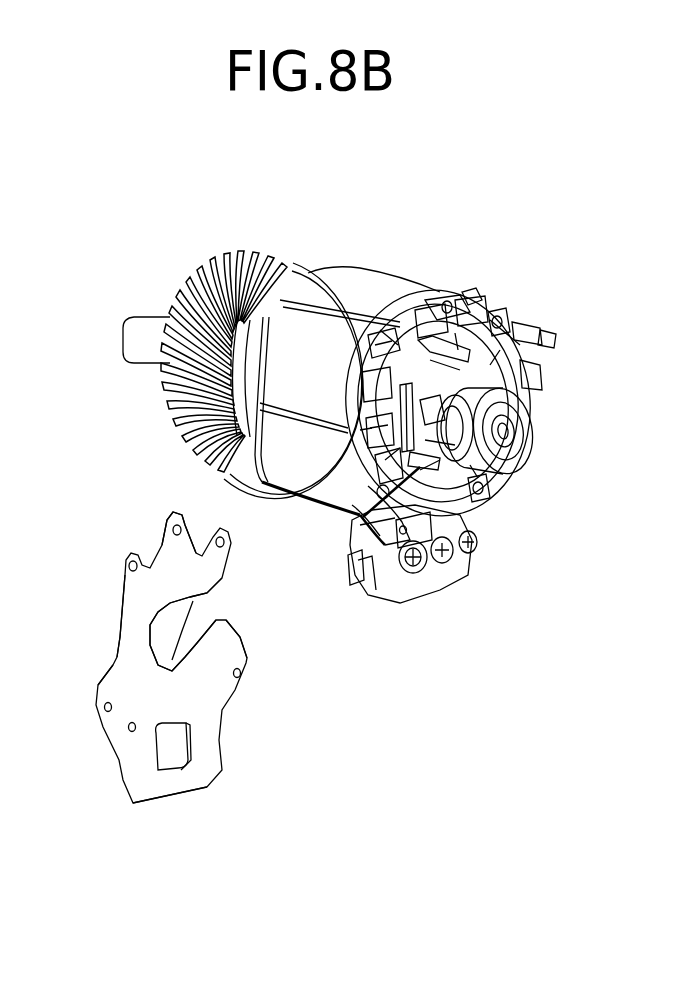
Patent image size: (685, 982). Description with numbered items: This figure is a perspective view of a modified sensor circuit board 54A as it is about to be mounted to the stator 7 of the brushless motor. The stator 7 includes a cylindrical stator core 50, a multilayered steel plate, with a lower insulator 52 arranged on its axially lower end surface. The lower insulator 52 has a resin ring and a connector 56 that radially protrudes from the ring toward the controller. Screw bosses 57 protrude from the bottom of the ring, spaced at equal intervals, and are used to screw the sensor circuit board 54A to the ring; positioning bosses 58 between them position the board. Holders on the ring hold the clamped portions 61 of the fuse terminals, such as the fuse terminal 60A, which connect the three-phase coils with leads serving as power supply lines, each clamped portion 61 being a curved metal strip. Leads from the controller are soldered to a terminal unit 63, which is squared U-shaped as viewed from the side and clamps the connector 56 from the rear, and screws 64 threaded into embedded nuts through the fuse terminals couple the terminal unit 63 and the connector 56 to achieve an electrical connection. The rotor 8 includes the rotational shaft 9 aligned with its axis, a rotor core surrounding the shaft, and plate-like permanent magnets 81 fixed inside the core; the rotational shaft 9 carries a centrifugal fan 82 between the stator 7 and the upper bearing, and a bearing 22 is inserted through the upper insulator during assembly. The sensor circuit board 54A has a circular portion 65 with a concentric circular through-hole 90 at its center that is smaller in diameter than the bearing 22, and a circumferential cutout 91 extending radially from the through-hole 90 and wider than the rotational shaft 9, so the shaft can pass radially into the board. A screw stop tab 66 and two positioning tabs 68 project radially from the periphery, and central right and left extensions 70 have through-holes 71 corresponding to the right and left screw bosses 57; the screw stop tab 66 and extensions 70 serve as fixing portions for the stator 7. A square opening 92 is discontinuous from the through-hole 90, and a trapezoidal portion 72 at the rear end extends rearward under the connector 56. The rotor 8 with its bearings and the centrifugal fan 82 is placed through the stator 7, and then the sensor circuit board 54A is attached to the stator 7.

The stator 7 is at (362, 210).
The rotor 8 is at (300, 245).
The centrifugal fan 82 is at (262, 247).
The stator core 50 is at (403, 285).
The screw boss 57 is at (440, 292).
The lower insulator 52 is at (468, 292).
The permanent magnet 81 is at (497, 318).
The positioning boss 58 is at (520, 328).
The clamped portion 61 is at (545, 342).
The bearing 22 is at (530, 412).
The rotational shaft 9 is at (520, 440).
The fuse terminal 60A is at (340, 460).
The connector 56 is at (356, 588).
The terminal unit 63 is at (400, 605).
The screw 64 is at (448, 602).
The sensor circuit board 54A is at (135, 537).
The screw stop tab 66 is at (170, 520).
The positioning tab 68 is at (130, 560).
The circular portion 65 is at (120, 605).
The through-hole 90 is at (160, 634).
The cutout 91 is at (213, 588).
The extension 70 is at (245, 662).
The through-hole 71 is at (240, 682).
The square opening 92 is at (178, 768).
The trapezoidal portion 72 is at (155, 790).